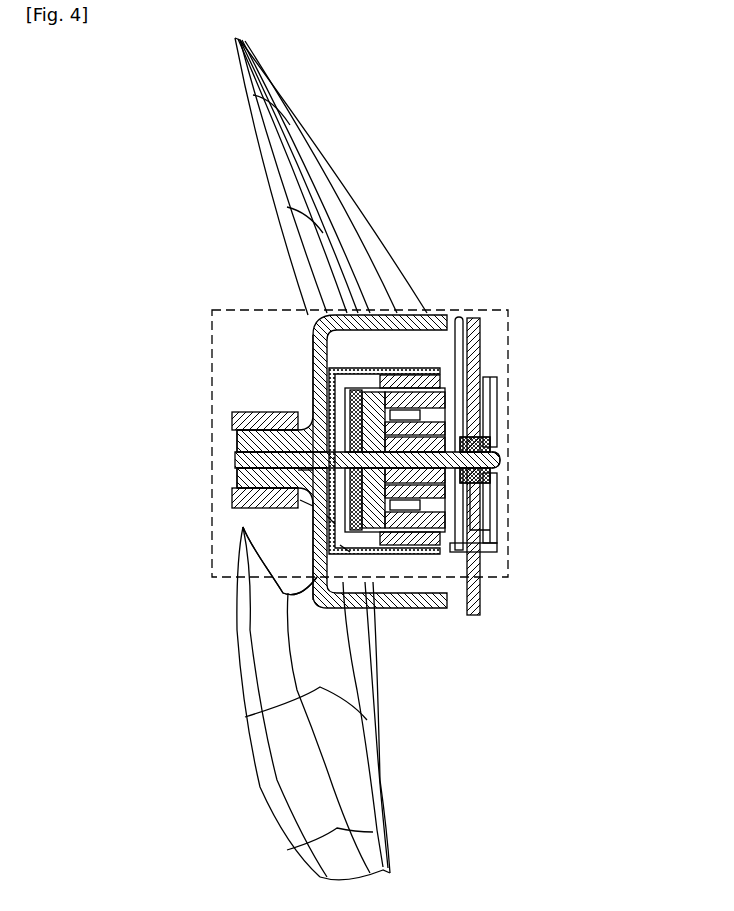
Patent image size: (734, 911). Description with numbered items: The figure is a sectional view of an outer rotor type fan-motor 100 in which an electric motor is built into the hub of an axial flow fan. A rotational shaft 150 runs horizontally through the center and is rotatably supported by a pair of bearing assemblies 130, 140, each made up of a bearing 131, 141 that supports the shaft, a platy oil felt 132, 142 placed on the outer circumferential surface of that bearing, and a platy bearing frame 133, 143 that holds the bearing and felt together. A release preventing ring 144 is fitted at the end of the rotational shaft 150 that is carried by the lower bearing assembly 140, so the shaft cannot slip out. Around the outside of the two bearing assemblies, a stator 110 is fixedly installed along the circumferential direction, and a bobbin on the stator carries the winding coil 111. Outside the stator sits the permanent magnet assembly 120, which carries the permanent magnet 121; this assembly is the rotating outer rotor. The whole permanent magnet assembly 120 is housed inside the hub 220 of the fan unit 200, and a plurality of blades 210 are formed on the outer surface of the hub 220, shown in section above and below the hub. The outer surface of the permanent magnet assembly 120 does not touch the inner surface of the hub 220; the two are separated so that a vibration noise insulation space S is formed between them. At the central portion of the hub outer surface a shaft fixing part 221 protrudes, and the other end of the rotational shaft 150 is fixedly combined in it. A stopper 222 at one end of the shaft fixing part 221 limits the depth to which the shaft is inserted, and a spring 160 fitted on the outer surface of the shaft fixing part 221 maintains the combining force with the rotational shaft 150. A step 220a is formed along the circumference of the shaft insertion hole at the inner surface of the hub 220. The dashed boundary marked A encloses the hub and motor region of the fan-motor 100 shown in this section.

The outer rotor type fan-motor 100 is at (490, 346).
The stator 110 is at (435, 413).
The winding coil 111 is at (465, 540).
The permanent magnet assembly 120 is at (470, 578).
The permanent magnet 121 is at (458, 560).
The bearing assembly 130 is at (152, 582).
The bearing 131 is at (305, 504).
The oil felt 132 is at (330, 520).
The bearing frame 133 is at (345, 548).
The bearing assembly 140 is at (580, 428).
The bearing 141 is at (480, 443).
The oil felt 142 is at (480, 500).
The bearing frame 143 is at (480, 528).
The release preventing ring 144 is at (497, 461).
The rotational shaft 150 is at (245, 441).
The spring 160 is at (236, 420).
The fan unit 200 is at (310, 315).
The blade 210 is at (255, 83).
The hub 220 is at (318, 346).
The step 220a is at (330, 382).
The shaft fixing part 221 is at (300, 476).
The stopper 222 is at (245, 462).
The vibration noise insulation space S is at (392, 338).
The detail portion A is at (490, 308).